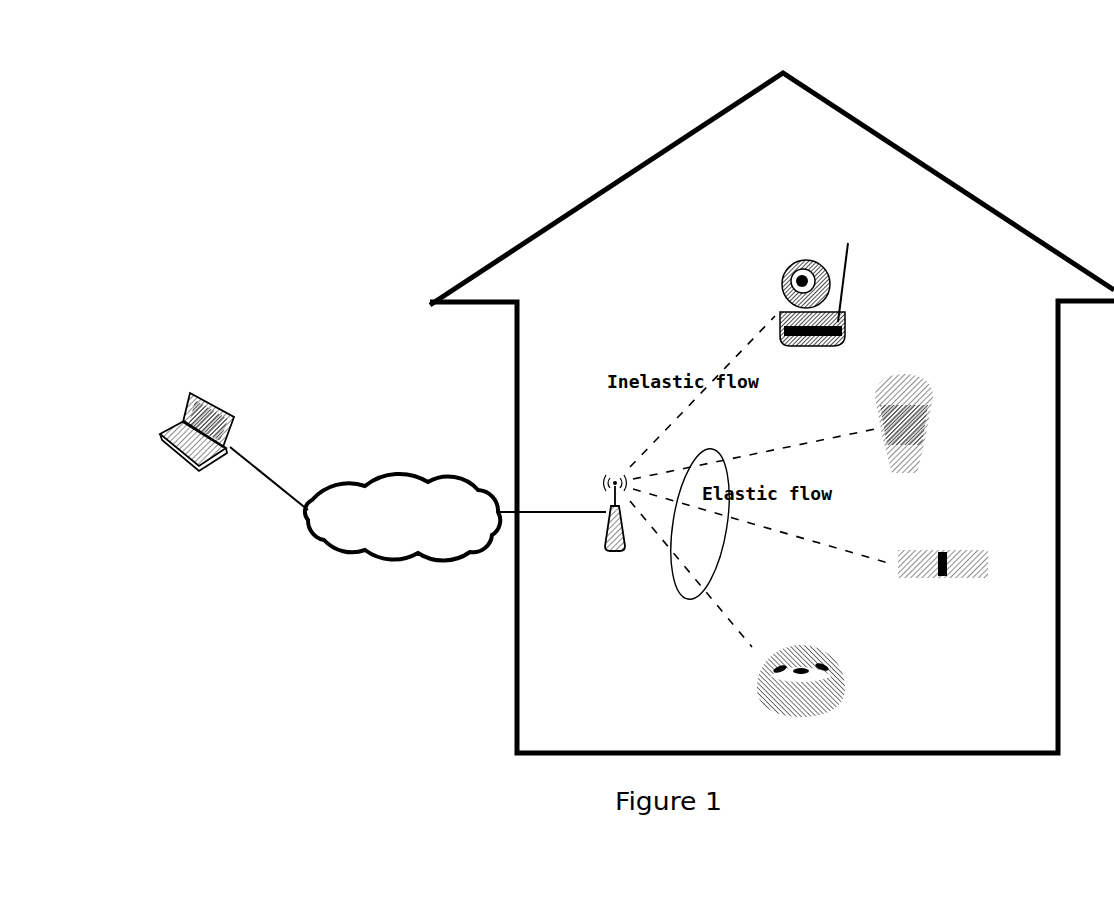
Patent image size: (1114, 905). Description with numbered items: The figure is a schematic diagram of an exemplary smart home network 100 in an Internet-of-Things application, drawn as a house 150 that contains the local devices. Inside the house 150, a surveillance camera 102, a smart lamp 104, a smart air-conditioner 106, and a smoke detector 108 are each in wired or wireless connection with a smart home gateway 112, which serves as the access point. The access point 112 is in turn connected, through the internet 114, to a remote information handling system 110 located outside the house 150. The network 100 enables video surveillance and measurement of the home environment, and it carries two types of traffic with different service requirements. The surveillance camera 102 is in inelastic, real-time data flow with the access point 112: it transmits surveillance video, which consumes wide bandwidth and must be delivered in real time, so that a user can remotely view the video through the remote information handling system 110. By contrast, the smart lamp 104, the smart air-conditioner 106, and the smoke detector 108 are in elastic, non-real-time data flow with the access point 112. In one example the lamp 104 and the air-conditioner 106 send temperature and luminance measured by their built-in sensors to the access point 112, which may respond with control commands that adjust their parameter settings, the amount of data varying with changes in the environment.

The smart home network 100 is at (982, 88).
The house 150 is at (1003, 219).
The surveillance camera 102 is at (842, 294).
The smart lamp 104 is at (929, 423).
The smart air-conditioner 106 is at (943, 582).
The smoke detector 108 is at (830, 681).
The remote information handling system 110 is at (197, 416).
The smart home gateway 112 is at (618, 532).
The internet 114 is at (402, 517).